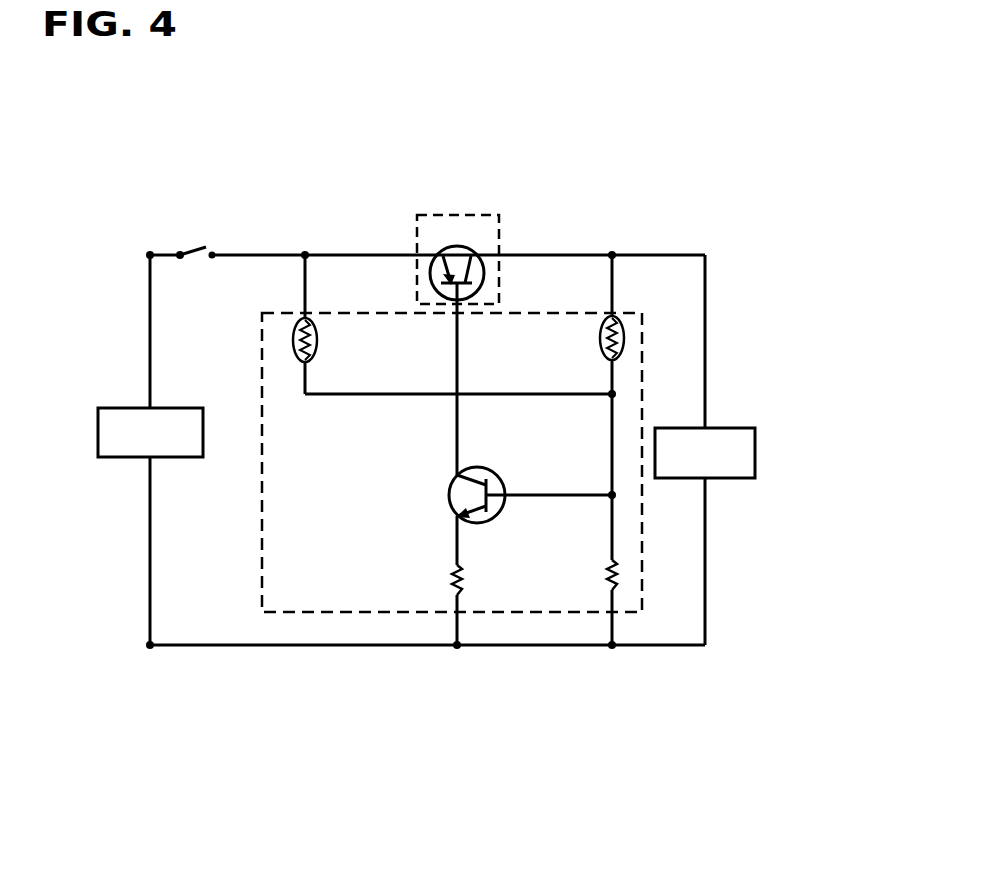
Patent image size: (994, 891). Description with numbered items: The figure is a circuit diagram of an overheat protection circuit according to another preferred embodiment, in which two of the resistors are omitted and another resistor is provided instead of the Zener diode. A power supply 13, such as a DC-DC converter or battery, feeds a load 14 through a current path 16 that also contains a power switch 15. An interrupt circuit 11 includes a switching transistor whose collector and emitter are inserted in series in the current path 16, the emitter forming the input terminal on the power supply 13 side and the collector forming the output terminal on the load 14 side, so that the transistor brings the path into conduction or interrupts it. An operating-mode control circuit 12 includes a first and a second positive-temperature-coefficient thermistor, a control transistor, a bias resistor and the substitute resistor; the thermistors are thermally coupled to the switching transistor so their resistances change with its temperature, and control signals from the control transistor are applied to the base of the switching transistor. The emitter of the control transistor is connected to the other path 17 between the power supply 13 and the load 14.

The interrupt circuit 11 is at (500, 215).
The operating-mode control circuit 12 is at (645, 338).
The power supply 13 is at (117, 458).
The load 14 is at (755, 465).
The power switch 15 is at (192, 250).
The current path 16 is at (328, 255).
The other path 17 is at (515, 648).